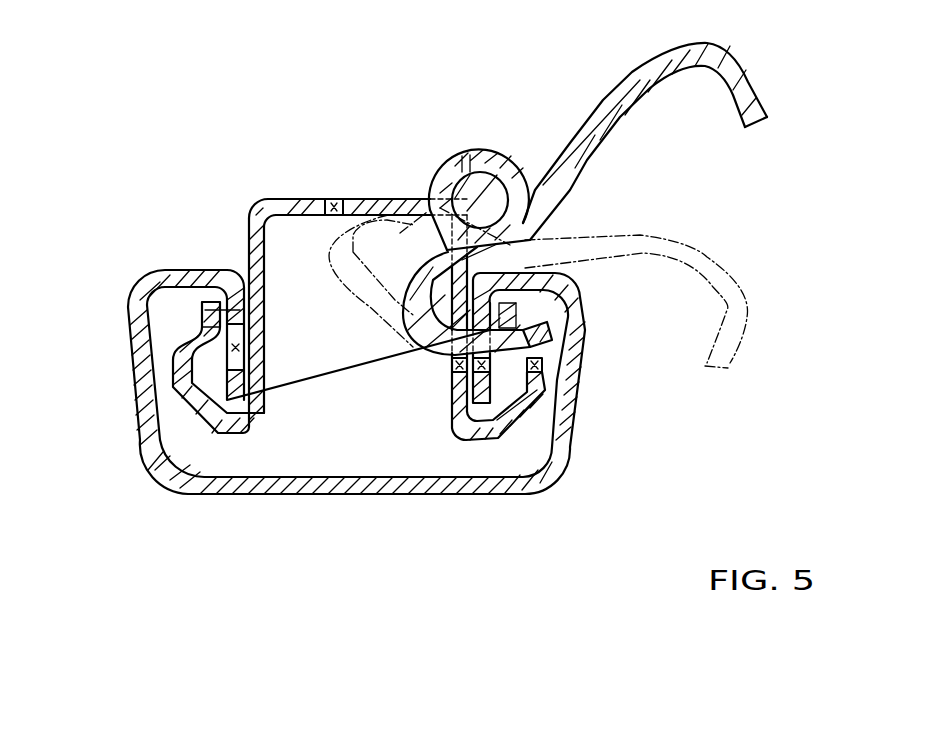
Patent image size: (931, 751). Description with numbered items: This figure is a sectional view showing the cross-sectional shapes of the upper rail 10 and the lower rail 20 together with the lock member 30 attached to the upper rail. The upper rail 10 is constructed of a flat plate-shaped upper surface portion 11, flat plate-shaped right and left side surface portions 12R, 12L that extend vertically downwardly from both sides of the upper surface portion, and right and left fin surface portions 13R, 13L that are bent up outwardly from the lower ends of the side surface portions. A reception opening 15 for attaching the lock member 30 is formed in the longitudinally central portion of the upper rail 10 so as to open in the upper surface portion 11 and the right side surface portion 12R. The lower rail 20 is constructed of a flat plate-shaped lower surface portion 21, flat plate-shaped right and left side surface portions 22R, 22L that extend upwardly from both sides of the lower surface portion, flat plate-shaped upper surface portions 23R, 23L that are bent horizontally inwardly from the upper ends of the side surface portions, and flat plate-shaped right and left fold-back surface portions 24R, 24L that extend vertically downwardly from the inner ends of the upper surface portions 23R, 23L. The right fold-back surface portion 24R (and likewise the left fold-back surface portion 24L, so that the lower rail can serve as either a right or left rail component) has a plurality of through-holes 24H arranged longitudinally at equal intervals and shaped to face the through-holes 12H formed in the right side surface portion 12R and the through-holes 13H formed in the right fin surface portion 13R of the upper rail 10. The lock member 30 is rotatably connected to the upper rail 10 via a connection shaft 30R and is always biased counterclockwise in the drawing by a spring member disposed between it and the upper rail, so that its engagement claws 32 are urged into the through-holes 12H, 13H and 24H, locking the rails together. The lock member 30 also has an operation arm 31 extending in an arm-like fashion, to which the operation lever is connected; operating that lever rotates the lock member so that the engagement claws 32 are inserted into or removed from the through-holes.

The upper rail 10 is at (268, 201).
The upper surface portion 11 is at (304, 199).
The reception opening 15 is at (337, 204).
The left side surface portion 12L is at (258, 396).
The right side surface portion 12R is at (454, 393).
The through-holes 12H is at (457, 364).
The left fin surface portion 13L is at (192, 410).
The right fin surface portion 13R is at (540, 432).
The through-holes 13H is at (532, 400).
The lower rail 20 is at (327, 490).
The lower surface portion 21 is at (393, 494).
The left side surface portion 22L is at (135, 339).
The right side surface portion 22R is at (576, 348).
The left upper surface portion 23L is at (205, 280).
The right upper surface portion 23R is at (552, 263).
The left fold-back surface portion 24L is at (200, 343).
The right fold-back surface portion 24R is at (483, 315).
The through-holes 24H is at (240, 311).
The lock member 30 is at (594, 125).
The connection shaft 30R is at (484, 185).
The operation arm 31 is at (743, 87).
The engagement claws 32 is at (548, 342).